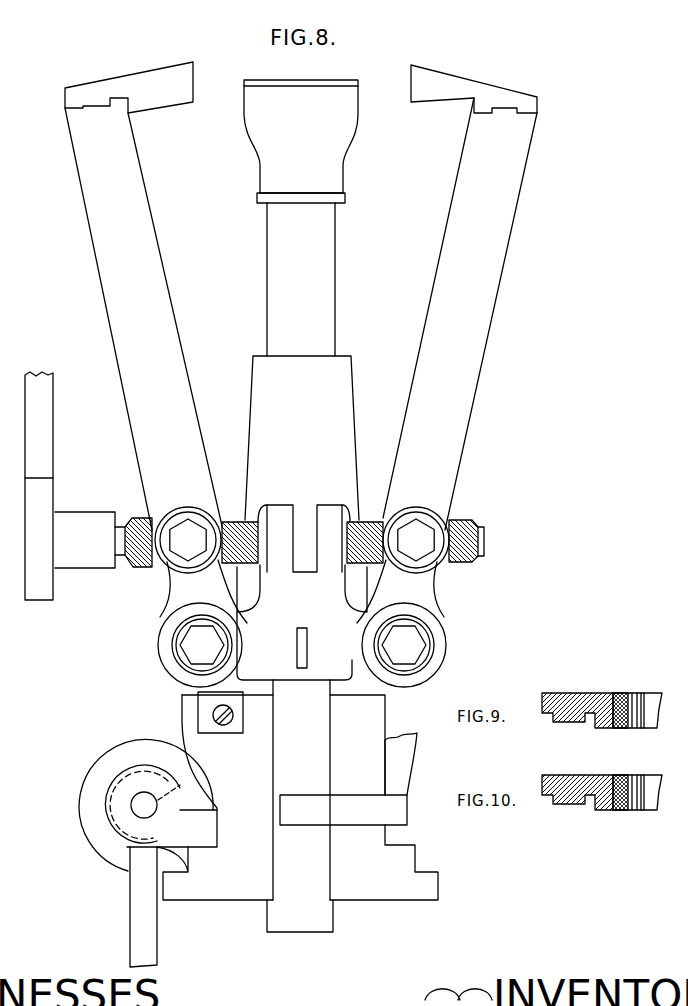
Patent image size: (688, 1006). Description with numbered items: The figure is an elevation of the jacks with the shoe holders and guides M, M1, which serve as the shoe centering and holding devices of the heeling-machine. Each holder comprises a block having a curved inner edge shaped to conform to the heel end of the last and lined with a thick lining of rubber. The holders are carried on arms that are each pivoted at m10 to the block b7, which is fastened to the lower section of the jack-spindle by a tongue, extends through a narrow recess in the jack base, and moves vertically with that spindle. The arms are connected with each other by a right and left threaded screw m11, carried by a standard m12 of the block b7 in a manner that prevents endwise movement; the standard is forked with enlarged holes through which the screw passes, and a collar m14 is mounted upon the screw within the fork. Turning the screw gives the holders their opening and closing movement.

In FIG. 8, the shoe holder and guide M is at (137, 95).
In FIG. 9, the shoe holder and guide M is at (602, 698).
In FIG. 8, the shoe holder and guide M1 is at (461, 90).
In FIG. 10, the shoe holder and guide M1 is at (602, 777).
In FIG. 8, the pivot m10 is at (200, 645).
In FIG. 8, the right and left threaded screw m11 is at (253, 527).
In FIG. 8, the standard m12 is at (330, 515).
In FIG. 8, the collar m14 is at (307, 507).
In FIG. 8, the block b7 is at (308, 636).